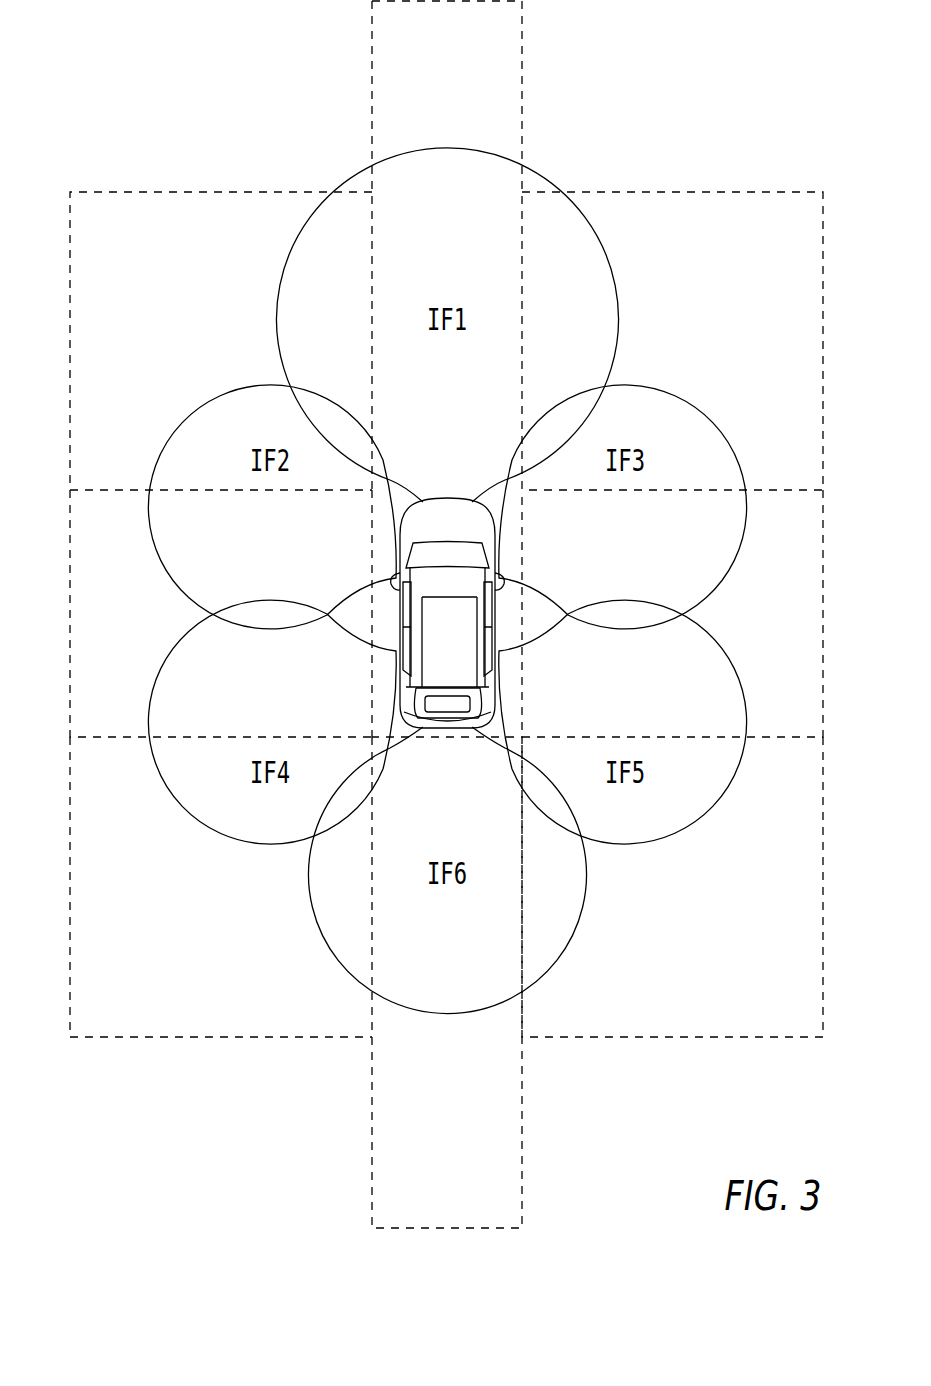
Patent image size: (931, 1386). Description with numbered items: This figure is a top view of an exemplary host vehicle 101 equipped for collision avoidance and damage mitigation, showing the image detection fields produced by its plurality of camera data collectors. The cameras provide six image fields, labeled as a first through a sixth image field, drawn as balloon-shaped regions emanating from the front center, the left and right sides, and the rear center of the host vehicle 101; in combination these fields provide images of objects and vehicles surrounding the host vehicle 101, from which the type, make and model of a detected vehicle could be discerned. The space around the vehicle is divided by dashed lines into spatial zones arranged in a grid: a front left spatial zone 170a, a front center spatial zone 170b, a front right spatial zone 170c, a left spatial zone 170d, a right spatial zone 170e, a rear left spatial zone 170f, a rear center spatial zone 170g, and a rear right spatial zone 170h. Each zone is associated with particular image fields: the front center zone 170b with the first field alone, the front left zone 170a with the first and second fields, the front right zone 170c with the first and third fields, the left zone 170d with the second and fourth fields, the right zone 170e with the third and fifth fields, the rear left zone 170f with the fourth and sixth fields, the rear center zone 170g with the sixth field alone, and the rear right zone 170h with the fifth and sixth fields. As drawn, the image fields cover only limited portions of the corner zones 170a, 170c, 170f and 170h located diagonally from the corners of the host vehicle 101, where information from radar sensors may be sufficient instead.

The host vehicle 101 is at (440, 657).
The spatial zone 170a is at (105, 247).
The spatial zone 170b is at (436, 37).
The spatial zone 170c is at (768, 247).
The spatial zone 170d is at (101, 658).
The spatial zone 170e is at (764, 660).
The spatial zone 170f is at (103, 1007).
The spatial zone 170g is at (436, 1205).
The spatial zone 170h is at (765, 1007).